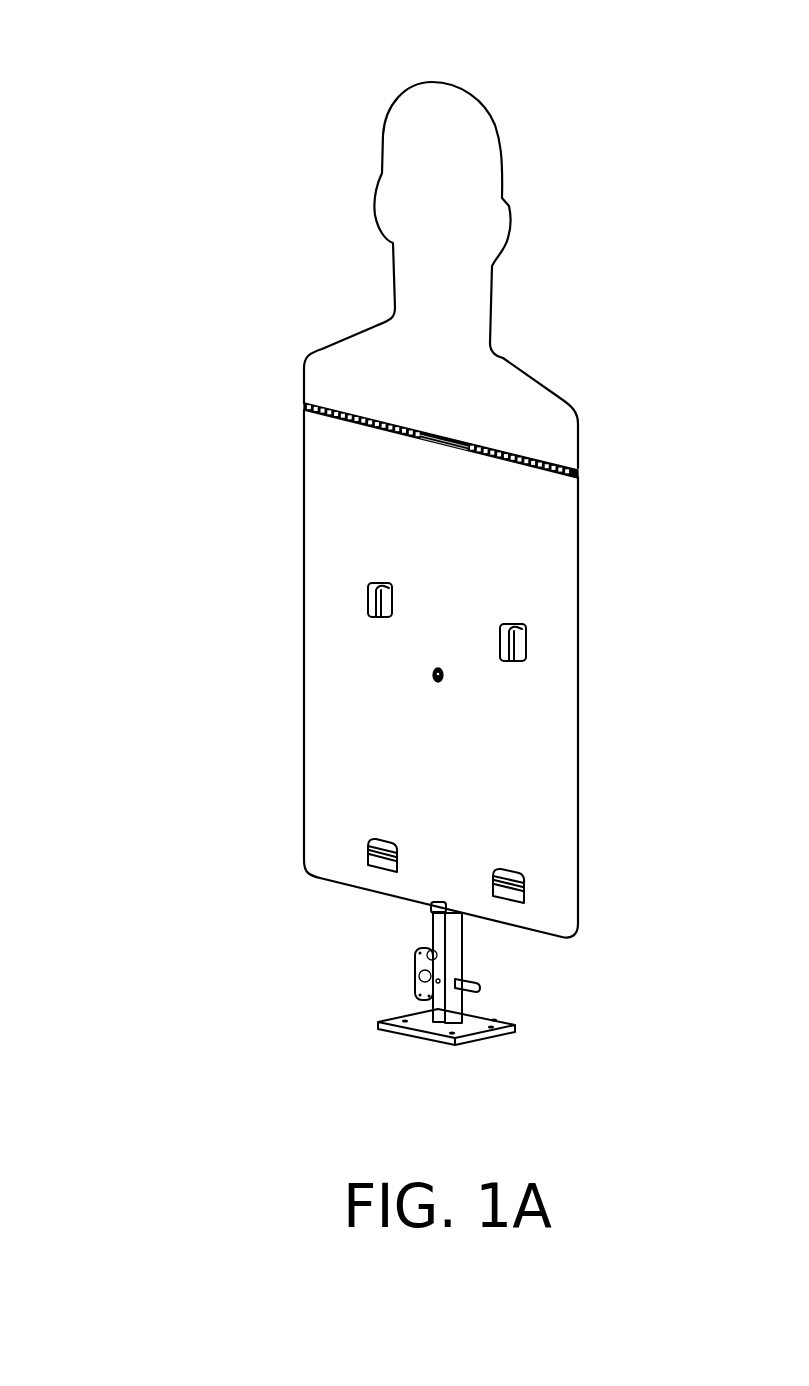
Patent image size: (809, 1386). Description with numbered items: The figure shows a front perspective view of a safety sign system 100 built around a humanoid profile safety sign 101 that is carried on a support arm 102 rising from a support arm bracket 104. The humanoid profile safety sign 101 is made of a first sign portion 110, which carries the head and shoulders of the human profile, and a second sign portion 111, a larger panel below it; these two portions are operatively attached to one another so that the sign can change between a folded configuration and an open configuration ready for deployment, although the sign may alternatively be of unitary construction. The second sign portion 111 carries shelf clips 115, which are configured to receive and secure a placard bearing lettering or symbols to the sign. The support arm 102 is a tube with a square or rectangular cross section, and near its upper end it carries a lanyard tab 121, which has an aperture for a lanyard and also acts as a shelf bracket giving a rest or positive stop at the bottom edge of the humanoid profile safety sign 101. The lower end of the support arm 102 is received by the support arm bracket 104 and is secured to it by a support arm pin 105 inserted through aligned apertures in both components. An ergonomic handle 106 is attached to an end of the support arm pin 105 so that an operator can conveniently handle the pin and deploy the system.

The safety sign system 100 is at (68, 41).
The humanoid profile safety sign 101 is at (353, 287).
The first sign portion 110 is at (578, 443).
The second sign portion 111 is at (579, 598).
The shelf clips 115 is at (367, 857).
The lanyard tab 121 is at (432, 920).
The support arm 102 is at (463, 948).
The ergonomic handle 106 is at (414, 970).
The support arm pin 105 is at (480, 990).
The support arm bracket 104 is at (407, 1030).